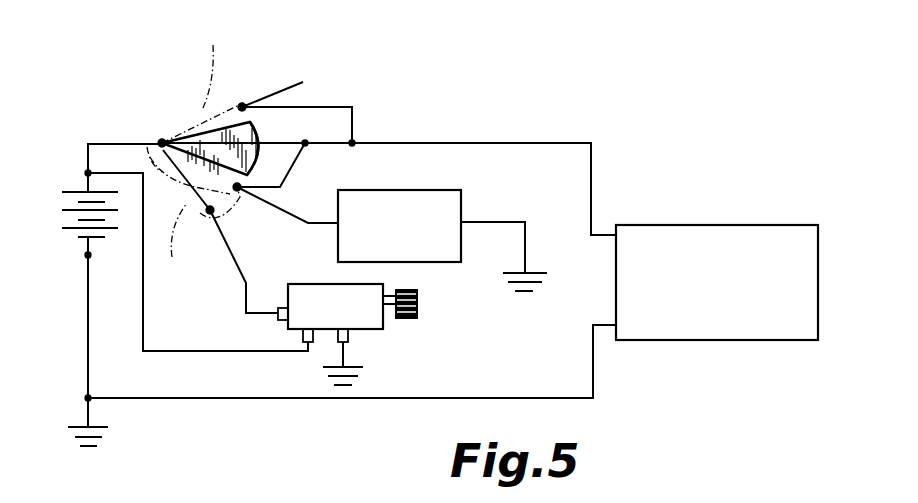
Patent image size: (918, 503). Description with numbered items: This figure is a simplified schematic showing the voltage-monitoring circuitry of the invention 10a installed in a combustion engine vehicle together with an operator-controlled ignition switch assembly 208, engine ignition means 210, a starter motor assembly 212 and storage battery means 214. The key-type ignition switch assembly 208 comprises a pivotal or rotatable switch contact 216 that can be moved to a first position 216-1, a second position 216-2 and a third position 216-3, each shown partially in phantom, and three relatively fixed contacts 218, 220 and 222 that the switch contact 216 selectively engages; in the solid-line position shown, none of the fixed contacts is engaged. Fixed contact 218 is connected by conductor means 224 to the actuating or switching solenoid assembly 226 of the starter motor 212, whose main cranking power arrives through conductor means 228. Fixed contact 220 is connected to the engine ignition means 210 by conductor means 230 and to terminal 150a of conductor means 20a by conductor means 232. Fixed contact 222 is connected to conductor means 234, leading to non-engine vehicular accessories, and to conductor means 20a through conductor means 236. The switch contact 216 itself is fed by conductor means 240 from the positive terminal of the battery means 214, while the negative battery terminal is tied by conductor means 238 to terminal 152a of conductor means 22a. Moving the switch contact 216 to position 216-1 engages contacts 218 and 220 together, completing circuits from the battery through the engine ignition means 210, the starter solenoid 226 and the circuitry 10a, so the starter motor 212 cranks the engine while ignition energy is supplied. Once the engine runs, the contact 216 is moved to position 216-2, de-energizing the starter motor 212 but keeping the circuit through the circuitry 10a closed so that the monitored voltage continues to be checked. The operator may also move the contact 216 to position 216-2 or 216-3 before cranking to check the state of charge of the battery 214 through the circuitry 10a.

The circuitry of the invention 10a is at (728, 224).
The conductor means 20a is at (537, 141).
The conductor means 22a is at (400, 399).
The terminal 150a is at (307, 148).
The terminal 152a is at (91, 396).
The ignition switch assembly 208 is at (177, 112).
The engine ignition means 210 is at (466, 203).
The starter motor assembly 212 is at (367, 332).
The storage battery means 214 is at (62, 218).
The switch contact 216 is at (200, 132).
The first position 216-1 is at (195, 222).
The second position 216-2 is at (147, 147).
The third position 216-3 is at (209, 82).
The fixed contact 218 is at (207, 216).
The fixed contact 220 is at (263, 145).
The fixed contact 222 is at (240, 103).
The conductor means 224 is at (247, 283).
The switching solenoid assembly 226 is at (280, 322).
The conductor means 228 is at (190, 353).
The conductor means 230 is at (284, 212).
The conductor means 232 is at (275, 183).
The conductor means 234 is at (292, 83).
The conductor means 236 is at (332, 105).
The conductor means 238 is at (88, 322).
The conductor means 240 is at (120, 143).